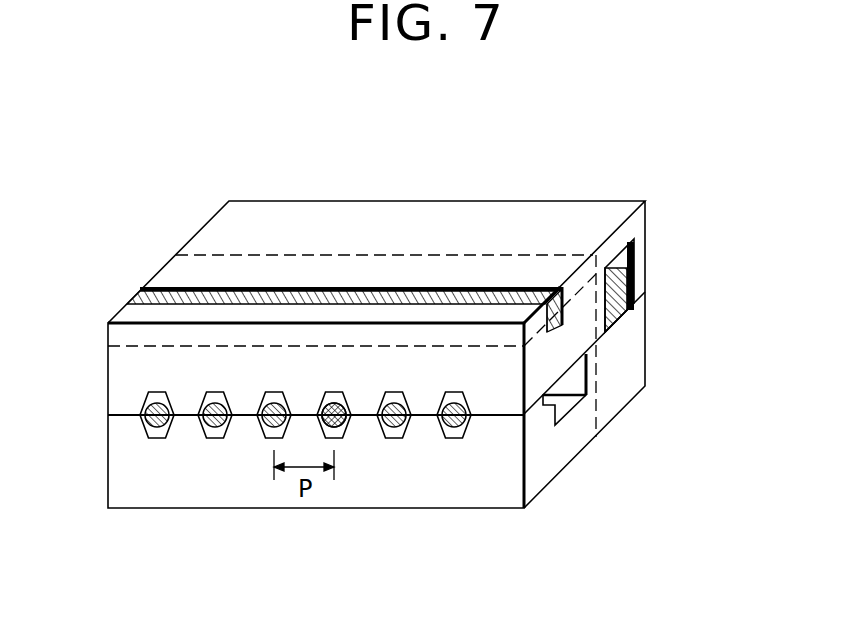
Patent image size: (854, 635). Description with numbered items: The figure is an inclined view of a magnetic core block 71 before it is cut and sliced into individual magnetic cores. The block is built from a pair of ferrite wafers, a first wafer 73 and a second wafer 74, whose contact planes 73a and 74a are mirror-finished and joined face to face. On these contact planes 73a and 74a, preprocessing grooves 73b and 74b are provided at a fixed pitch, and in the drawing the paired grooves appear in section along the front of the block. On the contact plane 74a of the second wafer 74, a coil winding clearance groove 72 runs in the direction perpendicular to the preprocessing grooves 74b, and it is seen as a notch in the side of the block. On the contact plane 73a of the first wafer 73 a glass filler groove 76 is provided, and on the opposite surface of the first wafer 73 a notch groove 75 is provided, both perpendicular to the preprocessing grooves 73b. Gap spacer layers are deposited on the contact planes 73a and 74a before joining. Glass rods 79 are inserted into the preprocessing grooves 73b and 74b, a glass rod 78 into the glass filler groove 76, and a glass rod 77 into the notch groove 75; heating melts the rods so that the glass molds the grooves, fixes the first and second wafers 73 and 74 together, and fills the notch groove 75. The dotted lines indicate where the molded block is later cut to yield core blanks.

The magnetic core block 71 is at (334, 177).
The coil winding clearance groove 72 is at (562, 405).
The first ferrite wafer 73 is at (439, 216).
The contact plane of the first wafer 73a is at (118, 414).
The preprocessing grooves of the first wafer 73b is at (216, 392).
The second ferrite wafer 74 is at (632, 356).
The contact plane of the second wafer 74a is at (118, 414).
The preprocessing grooves of the second wafer 74b is at (218, 440).
The notch groove 75 is at (322, 292).
The glass filler groove 76 is at (634, 250).
The glass rod 77 is at (459, 288).
The glass rod 78 is at (618, 297).
The glass rods 79 is at (398, 430).